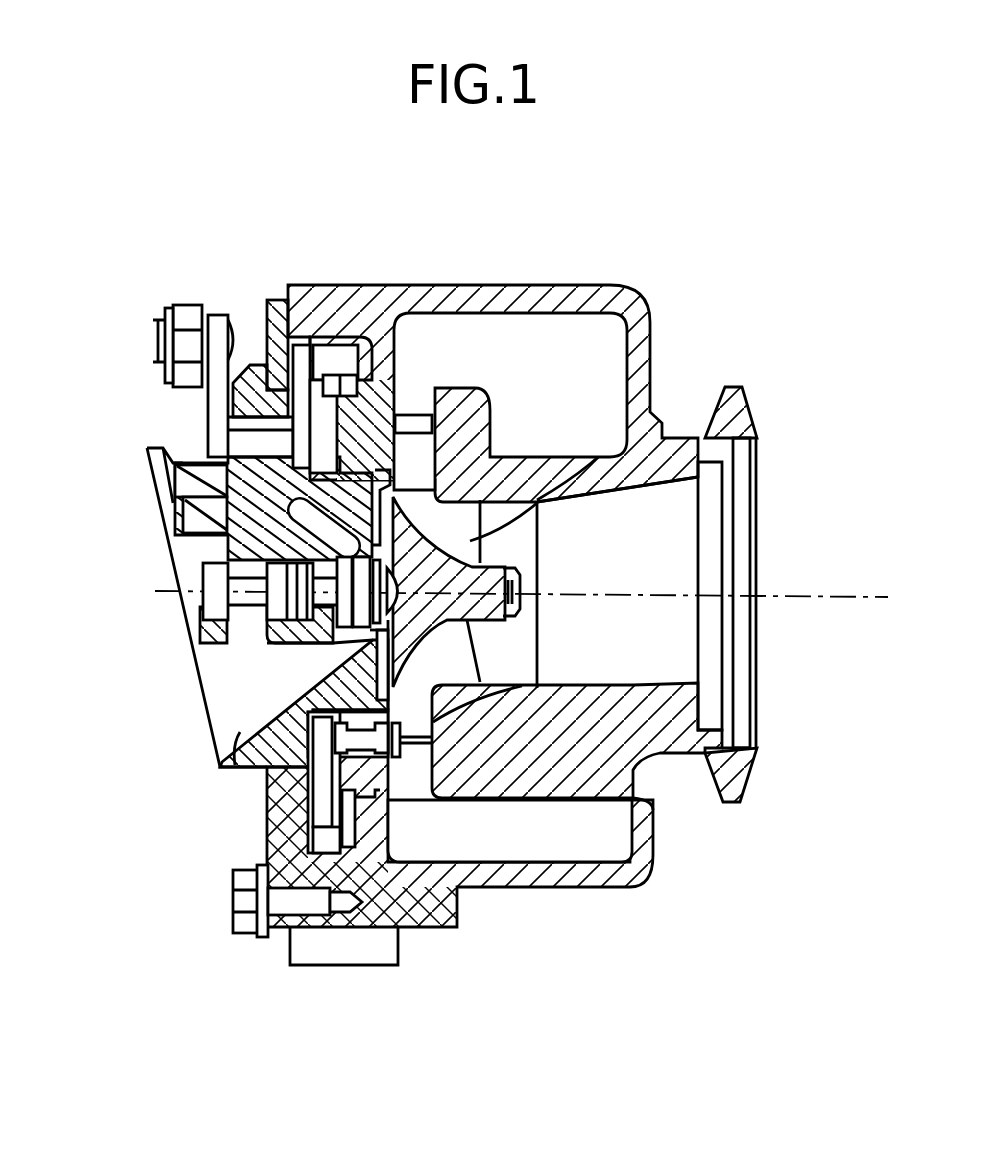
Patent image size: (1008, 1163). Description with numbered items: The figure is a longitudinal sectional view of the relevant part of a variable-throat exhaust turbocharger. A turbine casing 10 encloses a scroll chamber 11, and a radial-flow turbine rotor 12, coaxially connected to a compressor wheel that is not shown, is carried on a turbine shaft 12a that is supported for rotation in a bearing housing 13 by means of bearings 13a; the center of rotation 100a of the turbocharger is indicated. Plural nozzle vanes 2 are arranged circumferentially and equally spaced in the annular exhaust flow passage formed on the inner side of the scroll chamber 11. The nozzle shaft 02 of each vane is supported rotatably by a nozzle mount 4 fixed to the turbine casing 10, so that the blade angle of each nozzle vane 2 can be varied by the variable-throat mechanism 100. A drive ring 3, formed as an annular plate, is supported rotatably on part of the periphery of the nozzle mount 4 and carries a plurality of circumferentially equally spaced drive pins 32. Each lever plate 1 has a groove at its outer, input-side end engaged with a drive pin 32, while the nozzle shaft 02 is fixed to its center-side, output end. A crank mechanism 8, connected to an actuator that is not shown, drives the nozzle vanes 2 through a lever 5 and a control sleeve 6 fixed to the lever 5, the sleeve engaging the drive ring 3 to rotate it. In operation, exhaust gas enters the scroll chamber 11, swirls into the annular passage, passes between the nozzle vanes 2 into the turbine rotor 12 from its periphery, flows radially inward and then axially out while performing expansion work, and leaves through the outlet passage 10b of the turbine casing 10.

The lever plate 1 is at (322, 748).
The nozzle vane 2 is at (620, 684).
The drive ring 3 is at (350, 847).
The nozzle mount 4 is at (392, 768).
The lever 5 is at (285, 345).
The control sleeve 6 is at (332, 380).
The crank mechanism 8 is at (320, 427).
The turbine casing 10 is at (643, 304).
The outlet passage 10b is at (675, 522).
The scroll chamber 11 is at (575, 363).
The turbine rotor 12 is at (573, 457).
The turbine shaft 12a is at (185, 585).
The bearing housing 13 is at (173, 512).
The bearings 13a is at (300, 653).
The drive pin 32 is at (325, 820).
The variable-throat mechanism 100 is at (280, 738).
The center of rotation 100a is at (682, 593).
The nozzle shaft 02 is at (345, 745).